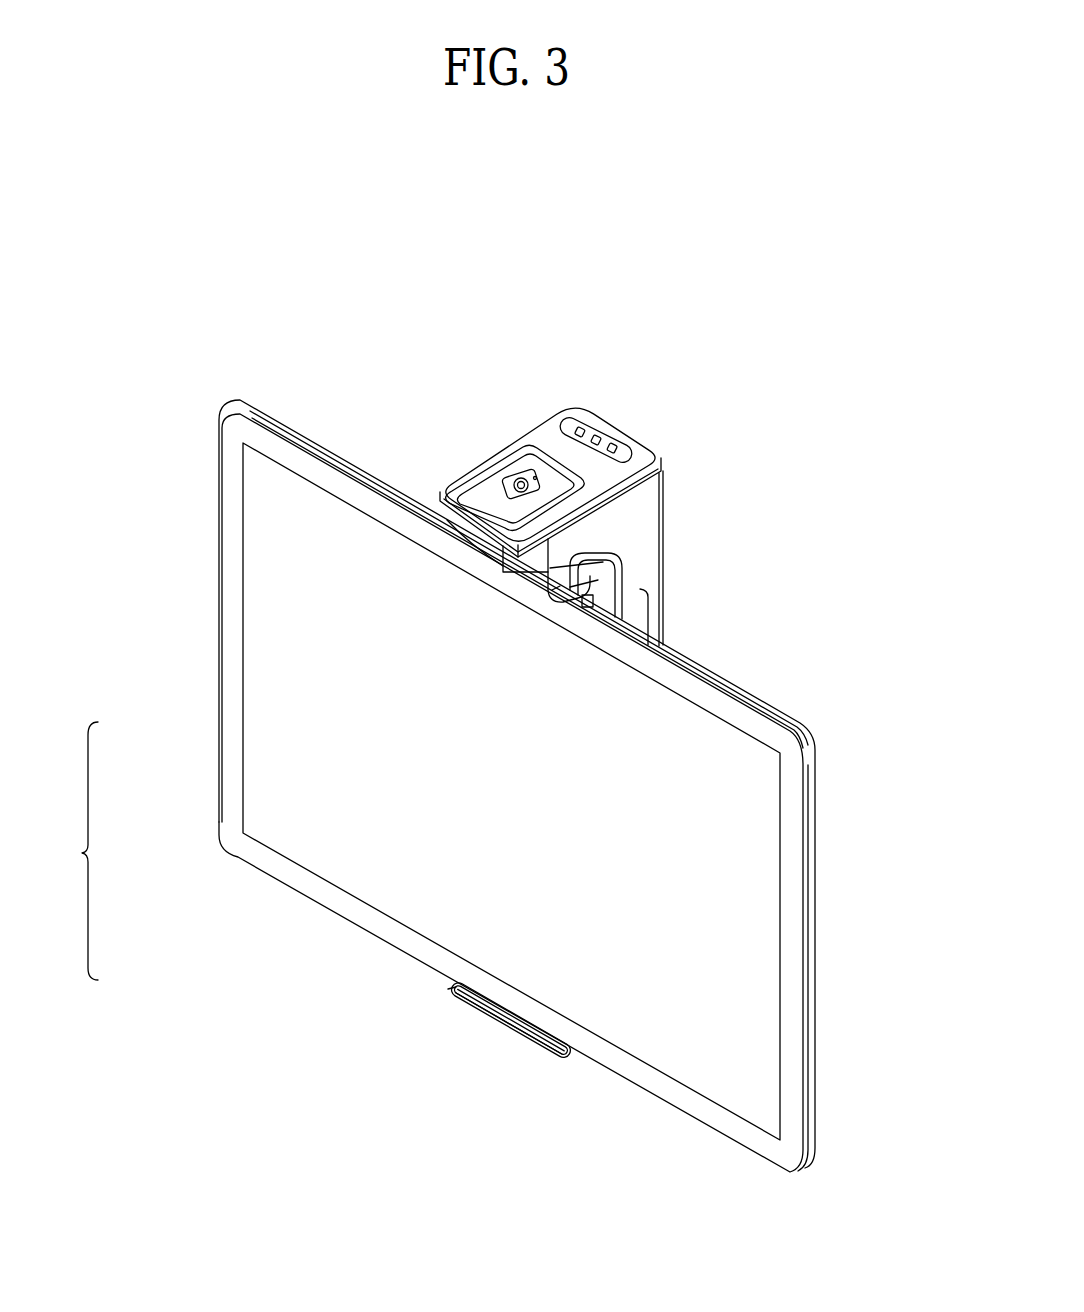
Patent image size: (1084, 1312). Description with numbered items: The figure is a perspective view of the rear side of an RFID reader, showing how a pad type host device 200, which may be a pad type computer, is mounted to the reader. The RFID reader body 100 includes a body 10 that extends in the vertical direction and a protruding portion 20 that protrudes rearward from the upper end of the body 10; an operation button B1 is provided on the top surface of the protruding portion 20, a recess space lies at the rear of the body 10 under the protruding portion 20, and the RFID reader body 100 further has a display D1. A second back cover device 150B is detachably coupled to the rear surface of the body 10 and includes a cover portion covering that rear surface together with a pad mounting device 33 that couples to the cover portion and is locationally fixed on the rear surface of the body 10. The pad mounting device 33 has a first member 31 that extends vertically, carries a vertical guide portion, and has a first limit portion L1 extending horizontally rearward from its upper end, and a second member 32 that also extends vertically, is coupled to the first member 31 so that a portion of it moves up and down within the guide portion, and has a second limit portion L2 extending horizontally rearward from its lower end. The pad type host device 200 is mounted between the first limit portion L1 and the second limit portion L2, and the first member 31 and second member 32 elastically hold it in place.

The pad type host device 200 is at (826, 921).
The RFID reader body 100 is at (455, 531).
The protruding portion 20 is at (515, 435).
The body 10 is at (633, 593).
The operation button B1 is at (470, 496).
The display D1 is at (565, 417).
The first member 31 is at (495, 582).
The second member 32 is at (488, 1017).
The pad mounting device 33 is at (70, 851).
The first limit portion L1 is at (560, 587).
The second limit portion L2 is at (453, 988).
The second back cover device 150B is at (505, 1040).